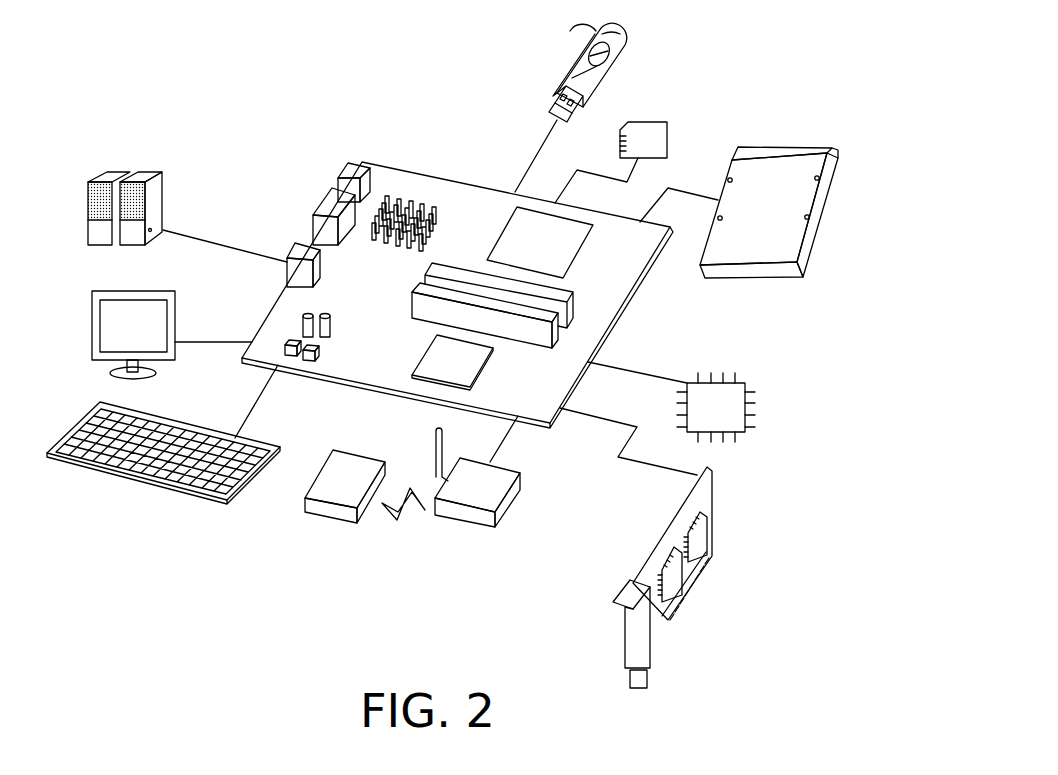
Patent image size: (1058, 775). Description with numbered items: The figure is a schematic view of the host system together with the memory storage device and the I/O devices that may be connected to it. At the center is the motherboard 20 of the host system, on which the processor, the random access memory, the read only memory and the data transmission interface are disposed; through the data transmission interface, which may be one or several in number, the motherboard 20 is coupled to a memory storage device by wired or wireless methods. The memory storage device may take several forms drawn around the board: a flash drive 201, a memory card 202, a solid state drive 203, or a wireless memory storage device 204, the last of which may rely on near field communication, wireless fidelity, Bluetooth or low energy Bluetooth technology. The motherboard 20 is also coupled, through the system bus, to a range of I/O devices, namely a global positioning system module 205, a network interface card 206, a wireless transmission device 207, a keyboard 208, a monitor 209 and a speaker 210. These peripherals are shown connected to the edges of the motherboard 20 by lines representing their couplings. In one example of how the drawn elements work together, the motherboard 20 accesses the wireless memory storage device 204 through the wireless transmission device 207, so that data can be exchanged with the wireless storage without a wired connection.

The motherboard 20 is at (453, 200).
The flash drive 201 is at (575, 65).
The memory card 202 is at (668, 136).
The solid state drive 203 is at (785, 147).
The wireless memory storage device 204 is at (322, 465).
The global positioning system module 205 is at (747, 408).
The network interface card 206 is at (712, 523).
The wireless transmission device 207 is at (513, 508).
The keyboard 208 is at (168, 492).
The monitor 209 is at (90, 342).
The speaker 210 is at (87, 232).